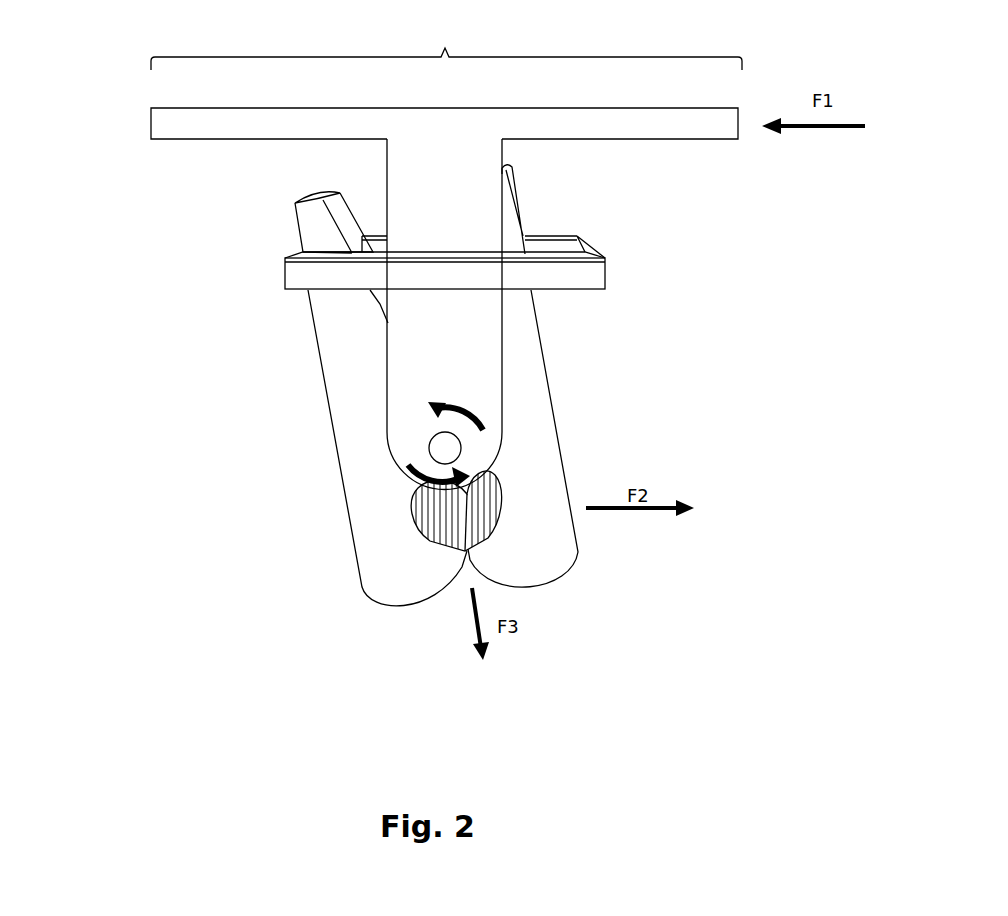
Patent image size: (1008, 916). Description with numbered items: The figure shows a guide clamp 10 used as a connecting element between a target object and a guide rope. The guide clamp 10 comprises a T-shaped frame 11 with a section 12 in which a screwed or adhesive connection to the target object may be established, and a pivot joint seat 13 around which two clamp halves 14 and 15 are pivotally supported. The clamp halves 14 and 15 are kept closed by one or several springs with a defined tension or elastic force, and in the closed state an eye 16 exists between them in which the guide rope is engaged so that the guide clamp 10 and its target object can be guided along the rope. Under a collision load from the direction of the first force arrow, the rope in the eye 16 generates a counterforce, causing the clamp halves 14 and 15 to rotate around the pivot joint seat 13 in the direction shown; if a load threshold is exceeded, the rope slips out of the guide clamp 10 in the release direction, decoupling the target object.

The guide clamp 10 is at (108, 320).
The T-shaped frame 11 is at (173, 126).
The section 12 is at (446, 39).
The pivot joint seat 13 is at (450, 451).
The clamp half 14 is at (530, 370).
The clamp half 15 is at (347, 370).
The eye 16 is at (455, 508).